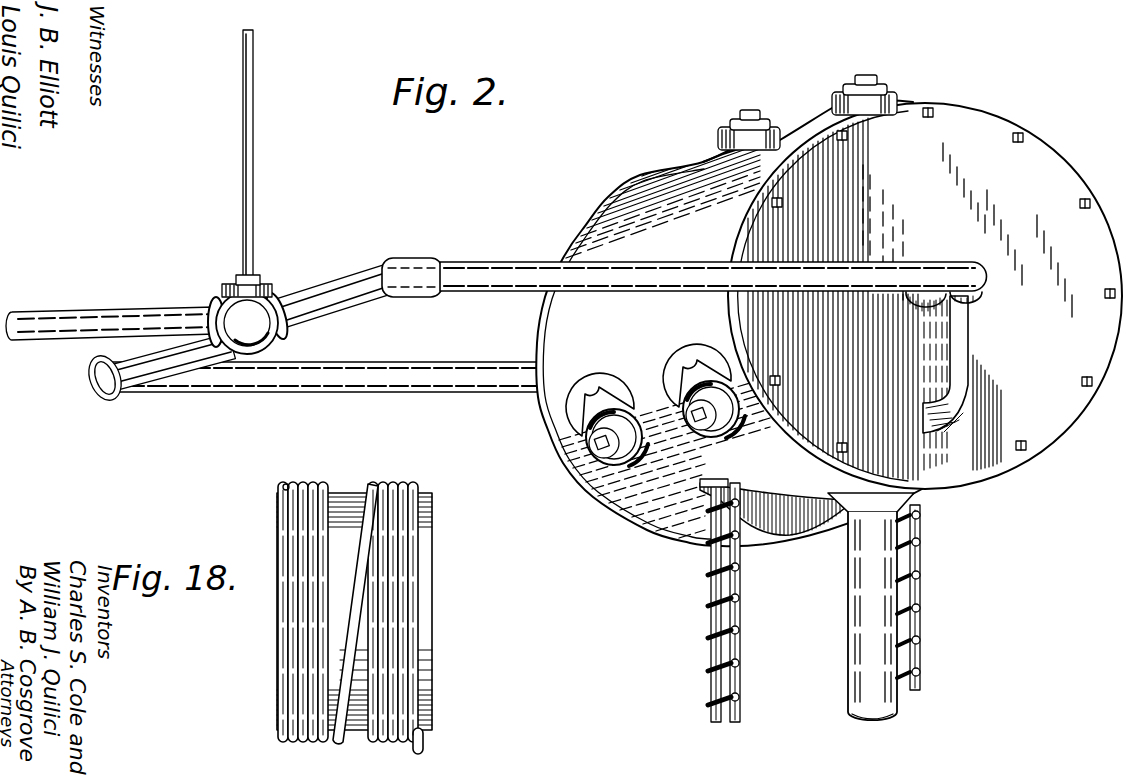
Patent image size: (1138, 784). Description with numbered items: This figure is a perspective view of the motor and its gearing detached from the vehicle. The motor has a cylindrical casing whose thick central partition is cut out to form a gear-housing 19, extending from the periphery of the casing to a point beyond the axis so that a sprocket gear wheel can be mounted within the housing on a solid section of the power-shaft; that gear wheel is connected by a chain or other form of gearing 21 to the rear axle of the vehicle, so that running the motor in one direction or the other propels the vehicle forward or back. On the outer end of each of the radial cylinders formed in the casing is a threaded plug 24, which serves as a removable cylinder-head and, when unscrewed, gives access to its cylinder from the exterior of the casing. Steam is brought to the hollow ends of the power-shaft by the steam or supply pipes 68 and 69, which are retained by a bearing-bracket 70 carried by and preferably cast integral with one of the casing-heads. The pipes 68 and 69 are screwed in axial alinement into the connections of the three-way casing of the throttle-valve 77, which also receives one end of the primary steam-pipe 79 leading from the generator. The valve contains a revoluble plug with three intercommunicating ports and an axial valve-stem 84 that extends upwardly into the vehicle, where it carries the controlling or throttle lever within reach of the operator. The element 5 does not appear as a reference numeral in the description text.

The drum end head 5 is at (925, 296).
The gear-housing 19 is at (785, 540).
The chain or other form of gearing 21 is at (919, 623).
The threaded plug 24 is at (596, 452).
The steam or supply pipe 68 is at (502, 262).
The steam or supply pipe 69 is at (364, 392).
The bearing-bracket 70 is at (960, 338).
The throttle-valve 77 is at (280, 350).
The primary steam-pipe 79 is at (69, 312).
The valve-stem 84 is at (257, 190).